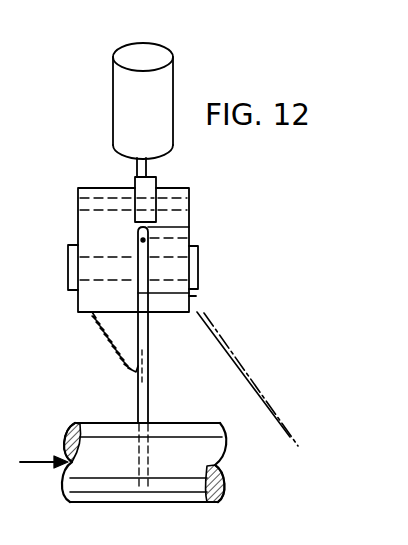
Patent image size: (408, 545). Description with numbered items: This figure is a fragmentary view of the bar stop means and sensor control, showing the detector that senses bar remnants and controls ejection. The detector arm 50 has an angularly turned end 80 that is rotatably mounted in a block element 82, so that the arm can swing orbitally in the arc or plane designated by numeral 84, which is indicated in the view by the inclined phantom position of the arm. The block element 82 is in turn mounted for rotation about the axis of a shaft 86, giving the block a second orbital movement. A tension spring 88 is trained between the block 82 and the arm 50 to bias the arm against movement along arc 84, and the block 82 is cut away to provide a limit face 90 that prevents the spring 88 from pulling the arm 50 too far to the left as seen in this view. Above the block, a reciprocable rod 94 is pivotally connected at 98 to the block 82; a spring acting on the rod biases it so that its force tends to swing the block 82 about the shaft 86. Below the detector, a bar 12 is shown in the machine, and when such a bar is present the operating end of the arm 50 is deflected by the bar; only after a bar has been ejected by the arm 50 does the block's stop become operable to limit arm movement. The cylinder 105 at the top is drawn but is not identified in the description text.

The bar 12 is at (80, 504).
The detector arm 50 is at (148, 392).
The angularly turned end 80 is at (190, 237).
The block element 82 is at (90, 230).
The arc of rotation 84 is at (287, 450).
The shaft 86 is at (68, 268).
The tension spring 88 is at (112, 346).
The limit face 90 is at (196, 296).
The reciprocable rod 94 is at (147, 168).
The pivotal connection 98 is at (189, 203).
The actuator cylinder 105 is at (113, 102).